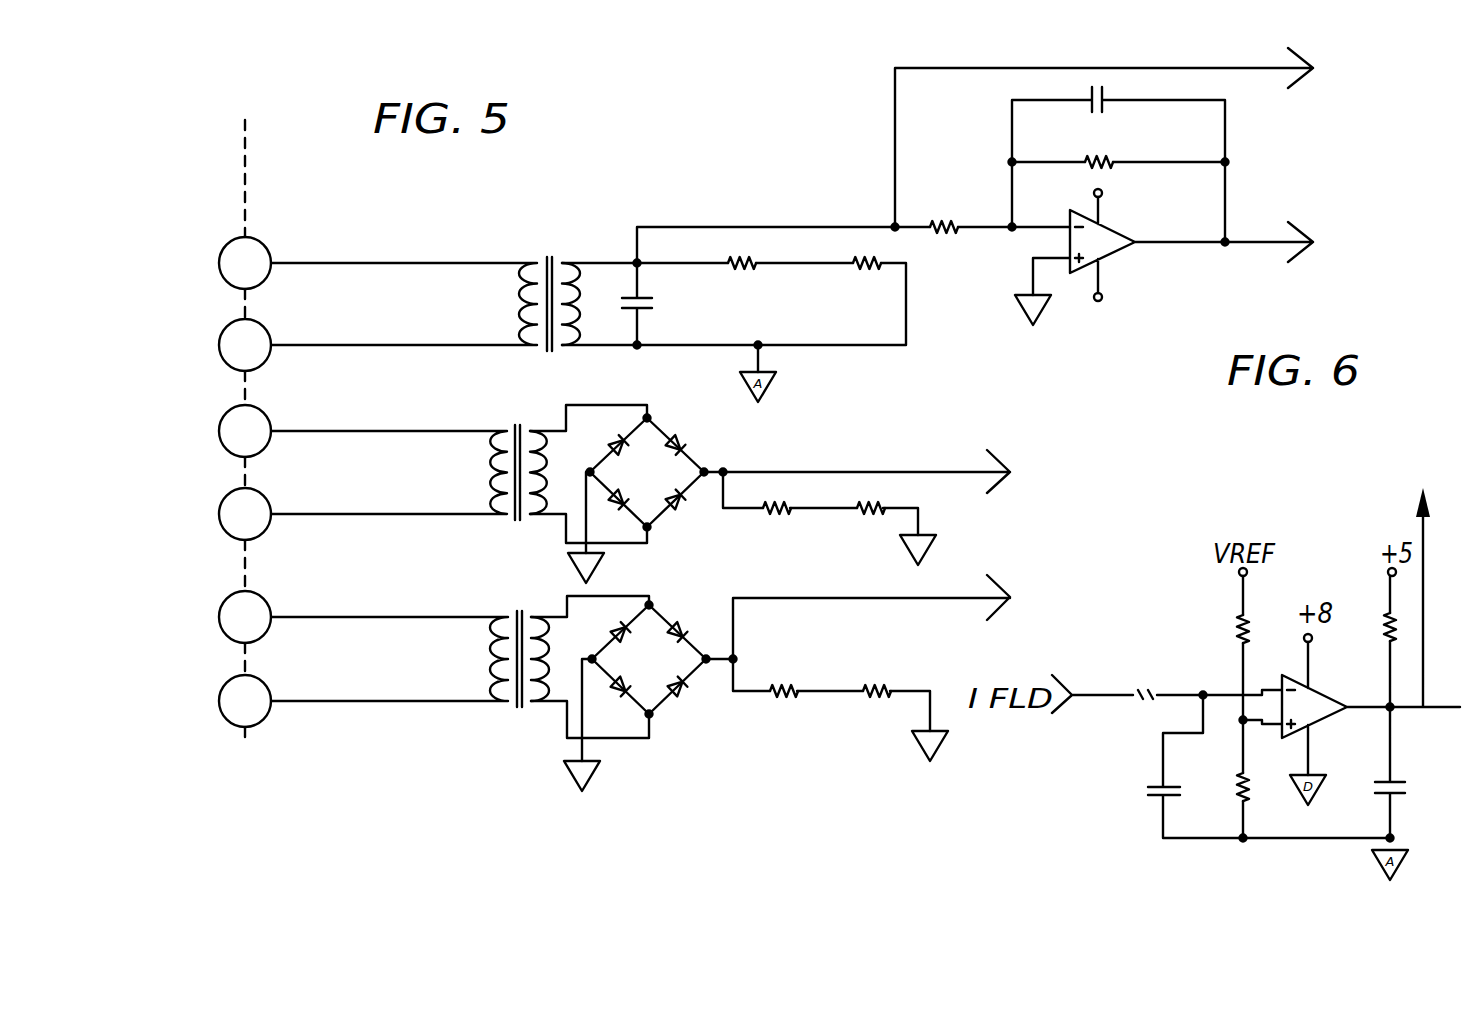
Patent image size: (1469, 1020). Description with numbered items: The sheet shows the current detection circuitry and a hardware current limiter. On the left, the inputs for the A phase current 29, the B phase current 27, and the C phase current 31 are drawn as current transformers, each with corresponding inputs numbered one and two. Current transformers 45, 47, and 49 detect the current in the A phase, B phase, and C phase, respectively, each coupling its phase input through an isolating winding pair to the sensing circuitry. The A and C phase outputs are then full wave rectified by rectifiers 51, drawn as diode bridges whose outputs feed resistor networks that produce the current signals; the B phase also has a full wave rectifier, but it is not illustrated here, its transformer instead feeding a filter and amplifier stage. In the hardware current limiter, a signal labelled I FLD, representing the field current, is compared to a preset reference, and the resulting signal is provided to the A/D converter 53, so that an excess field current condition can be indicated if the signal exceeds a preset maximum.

In FIG. 5, the B phase current 27 is at (192, 304).
In FIG. 5, the A phase current 29 is at (193, 472).
In FIG. 5, the C phase current 31 is at (194, 659).
In FIG. 5, the current transformer 45 is at (475, 472).
In FIG. 5, the current transformer 47 is at (507, 302).
In FIG. 5, the current transformer 49 is at (468, 658).
In FIG. 5, the rectifiers 51 is at (725, 452).
In FIG. 6, the A/D converter 53 is at (1387, 473).